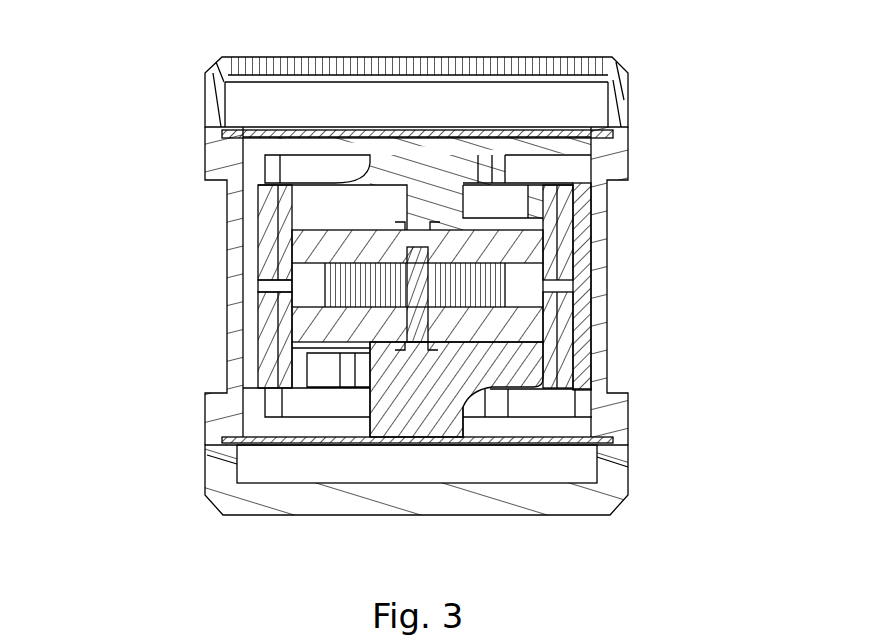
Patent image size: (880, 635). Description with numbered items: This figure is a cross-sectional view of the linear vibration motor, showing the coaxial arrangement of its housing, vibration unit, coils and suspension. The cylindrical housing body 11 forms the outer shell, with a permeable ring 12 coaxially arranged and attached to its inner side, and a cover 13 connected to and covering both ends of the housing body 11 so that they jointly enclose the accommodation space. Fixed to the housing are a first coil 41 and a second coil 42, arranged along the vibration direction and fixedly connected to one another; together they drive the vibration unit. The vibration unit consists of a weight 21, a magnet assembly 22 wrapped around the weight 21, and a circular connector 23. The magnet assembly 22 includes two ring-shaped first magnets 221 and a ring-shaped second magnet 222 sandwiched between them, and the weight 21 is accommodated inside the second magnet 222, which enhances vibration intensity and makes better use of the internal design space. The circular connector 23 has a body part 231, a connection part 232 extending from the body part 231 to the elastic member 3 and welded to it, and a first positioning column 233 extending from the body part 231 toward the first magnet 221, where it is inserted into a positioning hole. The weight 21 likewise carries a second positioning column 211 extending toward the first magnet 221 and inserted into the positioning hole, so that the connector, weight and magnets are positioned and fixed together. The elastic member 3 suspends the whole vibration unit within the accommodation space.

The elastic member 3 is at (620, 137).
The cylindrical housing body 11 is at (598, 202).
The permeable ring 12 is at (580, 227).
The cover 13 is at (625, 90).
The weight 21 is at (513, 307).
The second positioning column 211 is at (295, 232).
The magnet assembly 22 is at (180, 298).
The first magnet 221 is at (290, 350).
The second magnet 222 is at (282, 278).
The circular connector 23 is at (540, 377).
The body part 231 is at (303, 200).
The connection part 232 is at (385, 136).
The first positioning column 233 is at (410, 248).
The first coil 41 is at (575, 258).
The second coil 42 is at (565, 312).